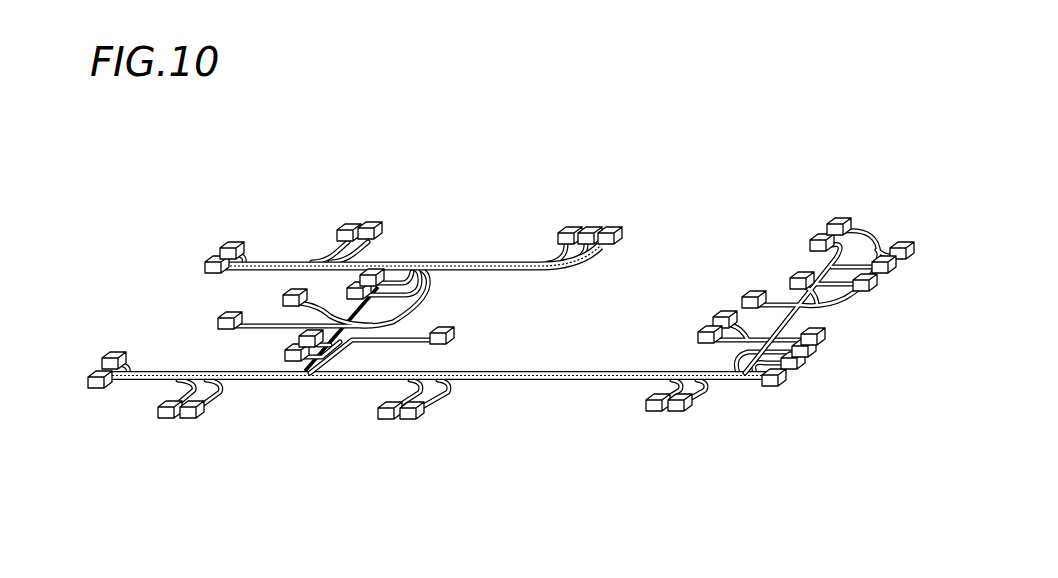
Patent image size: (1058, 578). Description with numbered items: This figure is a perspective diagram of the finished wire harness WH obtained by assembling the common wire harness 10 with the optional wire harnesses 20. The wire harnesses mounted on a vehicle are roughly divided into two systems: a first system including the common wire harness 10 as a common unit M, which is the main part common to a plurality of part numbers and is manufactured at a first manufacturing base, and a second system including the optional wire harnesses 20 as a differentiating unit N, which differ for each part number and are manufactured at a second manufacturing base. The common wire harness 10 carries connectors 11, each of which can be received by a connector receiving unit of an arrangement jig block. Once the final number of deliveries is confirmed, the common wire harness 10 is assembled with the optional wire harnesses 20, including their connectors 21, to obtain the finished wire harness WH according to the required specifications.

The common wire harness 10 is at (498, 270).
The connector 11 is at (608, 226).
The optional wire harness 20 is at (166, 368).
The connector 21 is at (587, 226).
The common unit M is at (539, 384).
The differentiating unit N is at (796, 258).
The finished wire harness WH is at (504, 344).